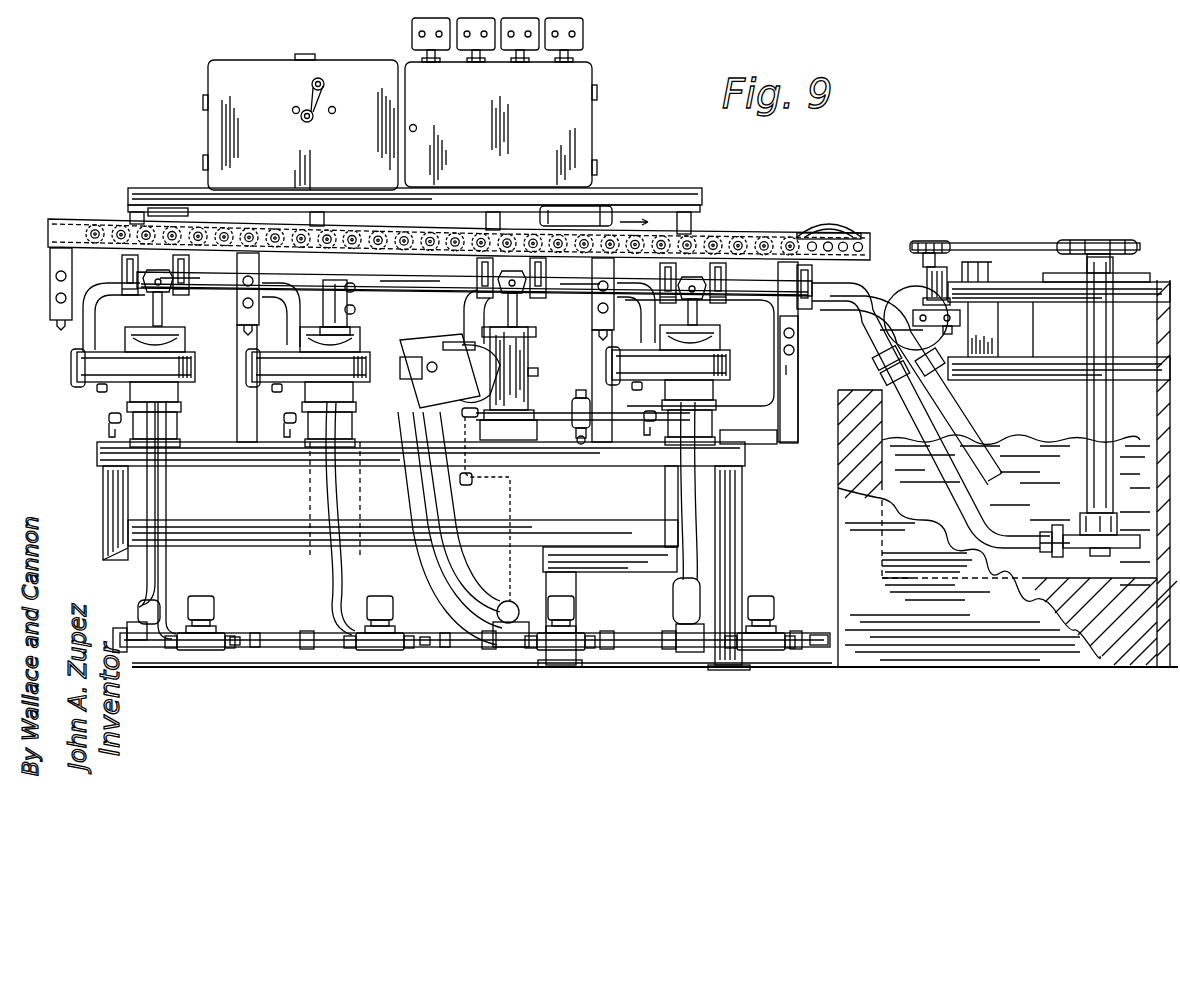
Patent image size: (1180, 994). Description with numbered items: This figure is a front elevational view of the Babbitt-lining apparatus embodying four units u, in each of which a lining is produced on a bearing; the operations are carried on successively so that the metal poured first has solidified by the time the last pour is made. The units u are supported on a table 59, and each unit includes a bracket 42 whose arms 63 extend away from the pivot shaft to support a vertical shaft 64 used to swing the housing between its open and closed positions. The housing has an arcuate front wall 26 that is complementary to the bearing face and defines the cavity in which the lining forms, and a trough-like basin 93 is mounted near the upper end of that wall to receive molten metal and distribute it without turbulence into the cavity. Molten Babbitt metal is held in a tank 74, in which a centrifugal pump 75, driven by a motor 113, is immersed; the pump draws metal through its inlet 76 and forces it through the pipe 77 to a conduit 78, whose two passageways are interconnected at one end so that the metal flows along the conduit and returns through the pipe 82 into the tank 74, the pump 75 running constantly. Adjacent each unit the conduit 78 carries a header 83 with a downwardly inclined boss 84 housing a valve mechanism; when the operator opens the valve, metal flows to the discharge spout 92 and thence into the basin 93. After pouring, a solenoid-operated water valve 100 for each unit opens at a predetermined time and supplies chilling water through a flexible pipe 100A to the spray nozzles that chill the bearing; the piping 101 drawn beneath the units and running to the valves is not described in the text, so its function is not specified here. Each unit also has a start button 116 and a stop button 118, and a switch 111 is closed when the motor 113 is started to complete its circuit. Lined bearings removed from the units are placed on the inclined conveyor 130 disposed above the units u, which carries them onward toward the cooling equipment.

The inclined conveyor 130 is at (400, 234).
The start button 116 is at (56, 278).
The stop button 118 is at (56, 300).
The header 83 is at (140, 274).
The discharge spout 92 is at (168, 292).
The trough-like basin 93 is at (164, 318).
The downwardly inclined boss 84 is at (150, 298).
The bracket 42 is at (180, 366).
The arcuate front wall 26 is at (523, 360).
The arms 63 is at (74, 360).
The vertical shaft 64 is at (88, 382).
The unit u is at (174, 350).
The table 59 is at (230, 458).
The hose 101 is at (166, 496).
The flexible pipe 100A is at (155, 506).
The water valve 100 is at (195, 596).
The tank 74 is at (848, 456).
The pipe 77 is at (960, 494).
The pipe 82 is at (980, 416).
The centrifugal pump 75 is at (1078, 514).
The inlet 76 is at (1092, 552).
The motor 113 is at (902, 278).
The conduit 78 is at (810, 270).
The switch 111 is at (800, 326).